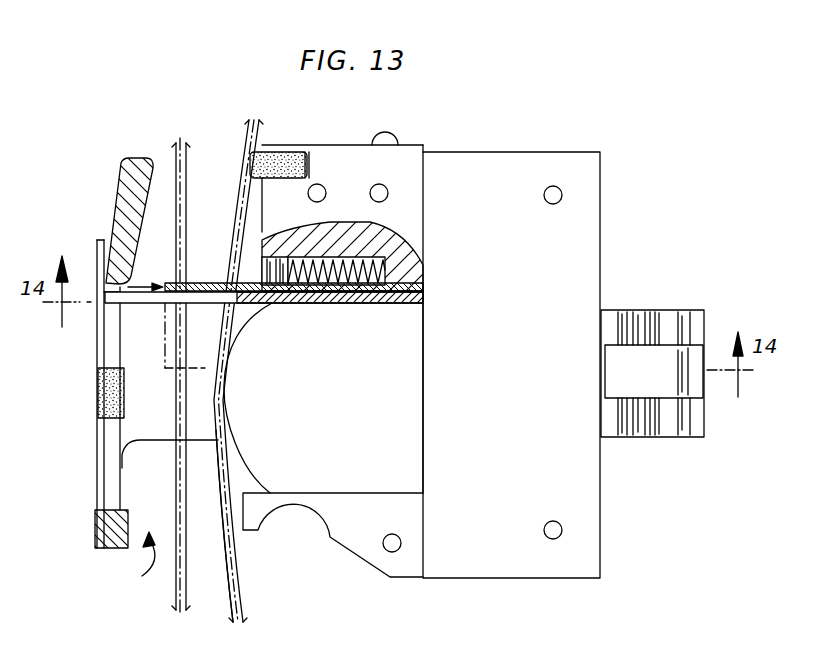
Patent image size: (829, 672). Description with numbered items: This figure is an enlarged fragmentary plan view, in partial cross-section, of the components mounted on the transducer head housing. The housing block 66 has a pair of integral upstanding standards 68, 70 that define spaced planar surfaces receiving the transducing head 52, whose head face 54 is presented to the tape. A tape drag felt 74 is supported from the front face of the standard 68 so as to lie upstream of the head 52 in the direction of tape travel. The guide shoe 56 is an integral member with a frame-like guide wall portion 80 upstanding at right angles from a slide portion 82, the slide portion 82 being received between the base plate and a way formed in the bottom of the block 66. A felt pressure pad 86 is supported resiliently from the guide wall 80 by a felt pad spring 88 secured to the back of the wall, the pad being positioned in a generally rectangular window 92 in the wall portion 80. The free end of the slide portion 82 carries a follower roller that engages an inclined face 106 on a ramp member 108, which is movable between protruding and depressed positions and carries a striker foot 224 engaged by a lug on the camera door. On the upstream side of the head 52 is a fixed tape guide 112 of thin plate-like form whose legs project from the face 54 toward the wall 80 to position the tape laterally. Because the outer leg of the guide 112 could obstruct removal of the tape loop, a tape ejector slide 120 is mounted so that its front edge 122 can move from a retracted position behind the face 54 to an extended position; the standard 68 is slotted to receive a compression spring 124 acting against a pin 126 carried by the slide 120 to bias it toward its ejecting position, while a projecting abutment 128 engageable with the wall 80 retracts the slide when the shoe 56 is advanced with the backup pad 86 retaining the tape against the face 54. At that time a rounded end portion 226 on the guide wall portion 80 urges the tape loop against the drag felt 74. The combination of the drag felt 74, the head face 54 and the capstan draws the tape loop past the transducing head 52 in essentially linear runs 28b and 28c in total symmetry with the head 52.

The rounded end portion 226 is at (153, 176).
The linear run 28b is at (245, 166).
The linear run 28c is at (240, 549).
The tape drag felt 74 is at (270, 158).
The standard 68 is at (378, 181).
The pin 126 is at (305, 250).
The compression spring 124 is at (368, 256).
The tape ejector slide 120 is at (421, 269).
The front edge 122 is at (180, 288).
The fixed tape guide 112 is at (342, 304).
The projecting abutment 128 is at (170, 292).
The felt pressure pad 86 is at (126, 392).
The slide portion 82 is at (168, 421).
The head face 54 is at (219, 378).
The transducing head 52 is at (351, 409).
The housing block 66 is at (531, 355).
The striker foot 224 is at (658, 388).
The inclined face 106 is at (618, 425).
The ramp member 108 is at (681, 430).
The felt pad spring 88 is at (97, 437).
The window 92 is at (118, 510).
The guide wall portion 80 is at (112, 549).
The guide shoe 56 is at (136, 567).
The standard 70 is at (390, 530).